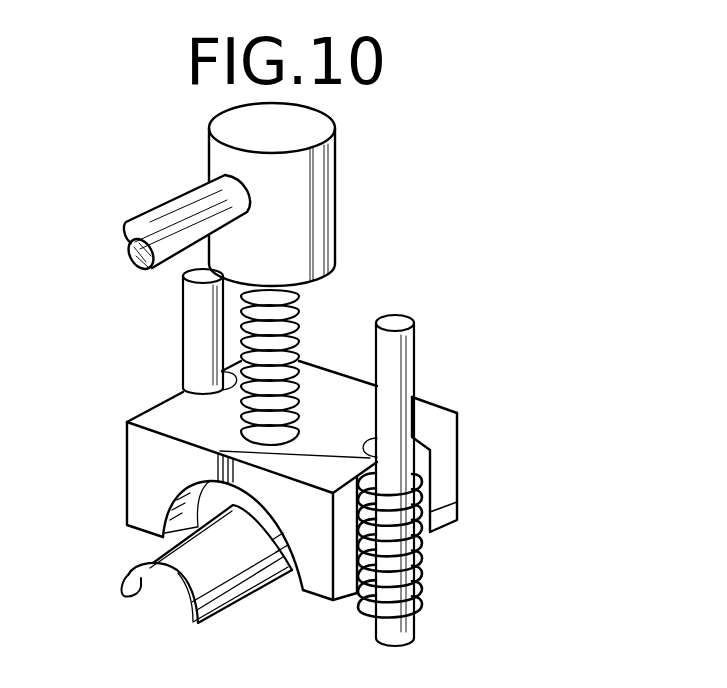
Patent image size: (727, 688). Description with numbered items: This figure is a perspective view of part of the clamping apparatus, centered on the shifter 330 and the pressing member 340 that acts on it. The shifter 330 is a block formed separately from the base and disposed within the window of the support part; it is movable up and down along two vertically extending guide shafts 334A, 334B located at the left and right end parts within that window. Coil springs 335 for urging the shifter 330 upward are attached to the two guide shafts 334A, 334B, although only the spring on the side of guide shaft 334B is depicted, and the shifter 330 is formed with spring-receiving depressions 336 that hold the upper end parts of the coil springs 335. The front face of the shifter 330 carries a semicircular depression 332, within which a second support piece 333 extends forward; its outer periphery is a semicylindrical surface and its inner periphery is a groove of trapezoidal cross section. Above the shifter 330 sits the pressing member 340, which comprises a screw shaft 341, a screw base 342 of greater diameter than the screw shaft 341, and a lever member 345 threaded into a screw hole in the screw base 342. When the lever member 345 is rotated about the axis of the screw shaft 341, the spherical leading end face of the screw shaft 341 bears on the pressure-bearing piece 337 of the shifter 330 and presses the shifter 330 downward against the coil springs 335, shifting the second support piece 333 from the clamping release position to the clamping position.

The shifter 330 is at (290, 480).
The semicircular depression 332 is at (263, 548).
The second support piece 333 is at (126, 576).
The guide shaft 334A is at (195, 329).
The guide shaft 334B is at (393, 351).
The coil spring 335 is at (418, 610).
The spring-receiving depression 336 is at (430, 512).
The pressure-bearing piece 337 is at (240, 471).
The pressing member 340 is at (239, 274).
The screw shaft 341 is at (298, 323).
The screw base 342 is at (308, 185).
The lever member 345 is at (151, 222).